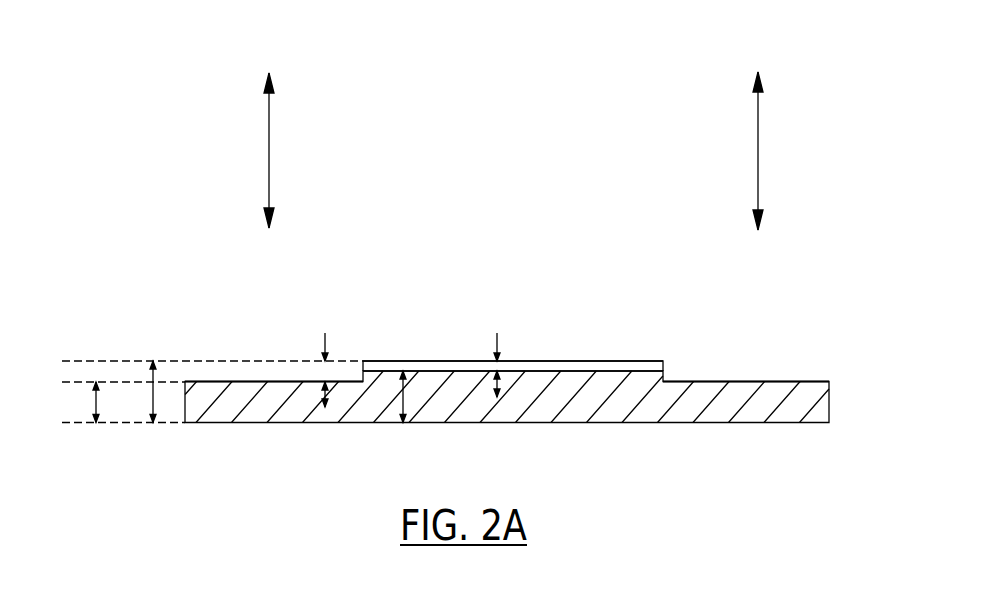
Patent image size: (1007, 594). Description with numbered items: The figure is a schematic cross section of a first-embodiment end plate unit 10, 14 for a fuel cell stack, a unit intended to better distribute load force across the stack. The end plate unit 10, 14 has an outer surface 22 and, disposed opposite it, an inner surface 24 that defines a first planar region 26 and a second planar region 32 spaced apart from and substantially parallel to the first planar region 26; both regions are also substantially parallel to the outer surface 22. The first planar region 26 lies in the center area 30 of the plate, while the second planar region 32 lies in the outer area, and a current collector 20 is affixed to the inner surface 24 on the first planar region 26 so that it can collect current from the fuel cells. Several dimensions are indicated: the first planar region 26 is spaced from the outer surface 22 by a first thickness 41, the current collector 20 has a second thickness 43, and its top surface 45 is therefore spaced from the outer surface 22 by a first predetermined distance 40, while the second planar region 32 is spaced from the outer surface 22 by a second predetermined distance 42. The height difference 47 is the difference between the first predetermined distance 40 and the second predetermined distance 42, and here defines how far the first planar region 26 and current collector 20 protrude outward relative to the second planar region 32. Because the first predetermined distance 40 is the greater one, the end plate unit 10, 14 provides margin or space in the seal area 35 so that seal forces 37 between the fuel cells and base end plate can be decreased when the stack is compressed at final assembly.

The end plate unit 10 is at (448, 282).
The end plate unit 14 is at (782, 192).
The current collector 20 is at (637, 360).
The outer surface 22 is at (730, 424).
The inner surface 24 is at (230, 380).
The first planar region 26 is at (568, 370).
The center area 30 is at (562, 280).
The second planar region 32 is at (292, 380).
The seal area 35 is at (242, 317).
The seal forces 37 is at (270, 153).
The first predetermined distance 40 is at (157, 388).
The first thickness 41 is at (405, 398).
The second predetermined distance 42 is at (95, 401).
The second thickness 43 is at (498, 334).
The top surface 45 is at (448, 360).
The height difference 47 is at (326, 334).